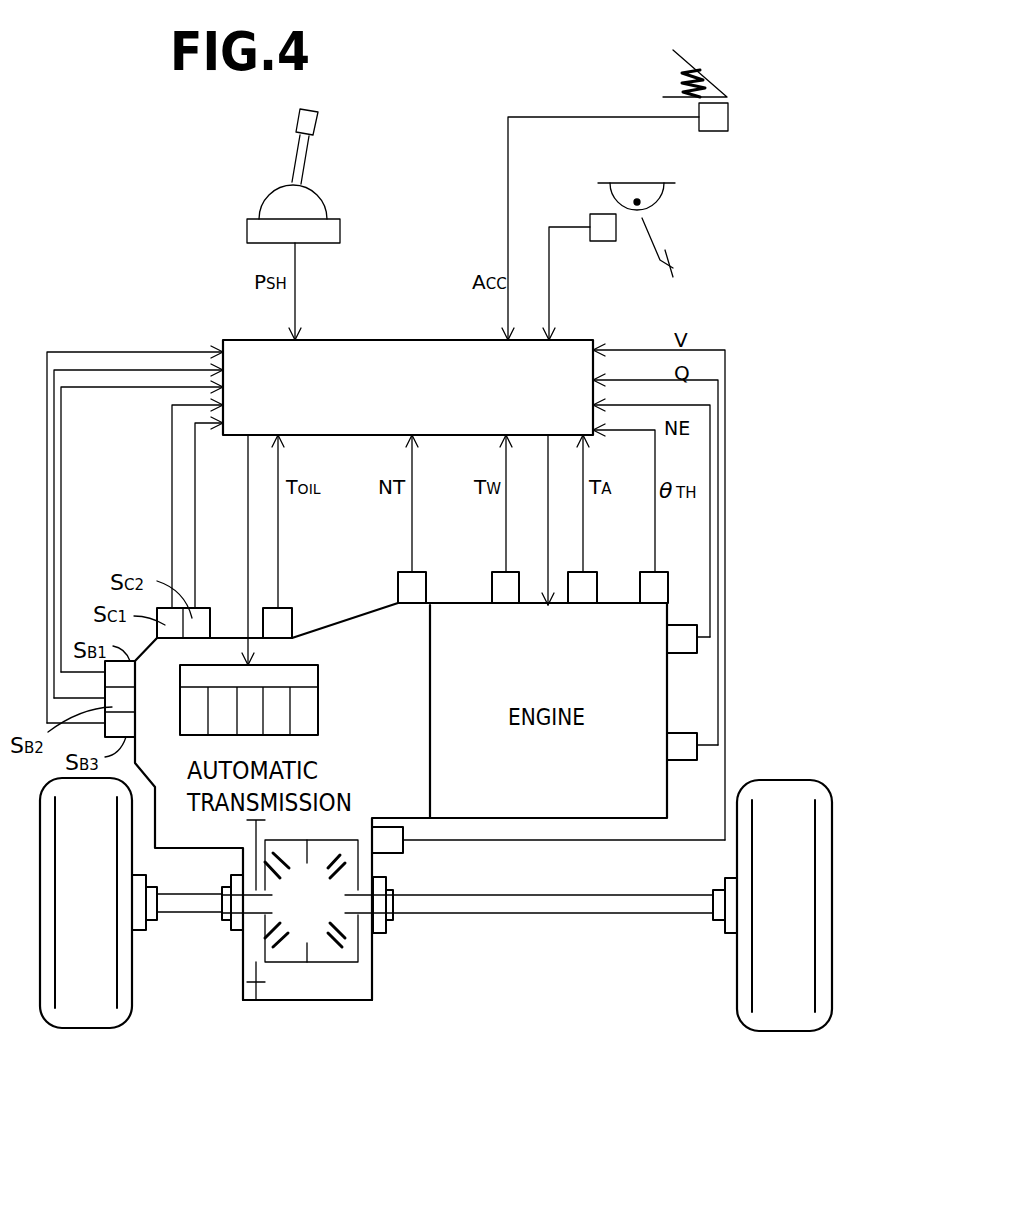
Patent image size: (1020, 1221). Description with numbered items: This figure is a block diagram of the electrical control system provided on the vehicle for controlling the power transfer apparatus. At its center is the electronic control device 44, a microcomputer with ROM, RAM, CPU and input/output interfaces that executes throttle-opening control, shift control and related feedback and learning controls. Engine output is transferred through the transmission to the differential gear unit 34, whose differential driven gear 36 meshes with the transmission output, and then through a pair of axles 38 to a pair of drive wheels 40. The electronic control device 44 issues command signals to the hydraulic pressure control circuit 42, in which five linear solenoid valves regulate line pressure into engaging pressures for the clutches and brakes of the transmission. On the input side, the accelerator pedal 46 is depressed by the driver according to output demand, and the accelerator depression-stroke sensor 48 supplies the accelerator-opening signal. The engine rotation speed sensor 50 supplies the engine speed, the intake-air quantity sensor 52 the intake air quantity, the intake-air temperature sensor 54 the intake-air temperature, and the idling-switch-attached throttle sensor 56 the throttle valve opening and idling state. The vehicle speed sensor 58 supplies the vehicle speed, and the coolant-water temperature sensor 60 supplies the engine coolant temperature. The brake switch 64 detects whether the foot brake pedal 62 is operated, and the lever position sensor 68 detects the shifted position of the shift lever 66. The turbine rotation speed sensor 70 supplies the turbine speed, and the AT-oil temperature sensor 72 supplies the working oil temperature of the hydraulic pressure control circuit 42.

The differential gear unit 34 is at (354, 970).
The differential driven gear 36 is at (262, 988).
The axles 38 is at (181, 900).
The drive wheels 40 is at (86, 1012).
The hydraulic pressure control circuit 42 is at (220, 665).
The electronic control device 44 is at (381, 350).
The accelerator pedal 46 is at (700, 68).
The accelerator depression-stroke sensor 48 is at (712, 131).
The engine rotation speed sensor 50 is at (684, 643).
The intake-air quantity sensor 52 is at (683, 751).
The intake-air temperature sensor 54 is at (586, 590).
The idling-switch-attached throttle sensor 56 is at (660, 590).
The vehicle speed sensor 58 is at (392, 847).
The coolant-water temperature sensor 60 is at (500, 590).
The foot brake pedal 62 is at (678, 268).
The brake switch 64 is at (603, 241).
The shift lever 66 is at (306, 150).
The lever position sensor 68 is at (247, 231).
The turbine rotation speed sensor 70 is at (405, 590).
The AT-oil temperature sensor 72 is at (284, 624).